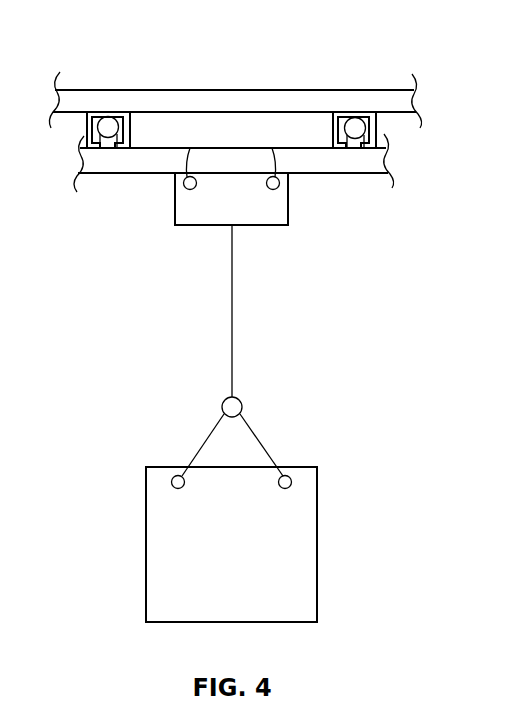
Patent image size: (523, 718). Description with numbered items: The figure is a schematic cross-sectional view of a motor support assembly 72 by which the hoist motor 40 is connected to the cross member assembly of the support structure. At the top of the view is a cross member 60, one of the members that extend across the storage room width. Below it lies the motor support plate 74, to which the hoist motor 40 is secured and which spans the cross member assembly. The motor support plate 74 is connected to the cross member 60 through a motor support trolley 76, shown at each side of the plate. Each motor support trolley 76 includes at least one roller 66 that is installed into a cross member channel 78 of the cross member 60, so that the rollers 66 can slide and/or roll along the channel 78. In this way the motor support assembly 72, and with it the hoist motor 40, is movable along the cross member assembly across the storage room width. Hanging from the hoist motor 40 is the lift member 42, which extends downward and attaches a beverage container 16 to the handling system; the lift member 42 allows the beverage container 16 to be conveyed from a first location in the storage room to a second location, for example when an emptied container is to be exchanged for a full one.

The beverage container 16 is at (219, 556).
The hoist motor 40 is at (218, 211).
The lift member 42 is at (232, 335).
The cross member 60 is at (302, 100).
The roller 66 is at (105, 120).
The motor support assembly 72 is at (142, 250).
The motor support plate 74 is at (207, 157).
The motor support trolley 76 is at (112, 147).
The cross member channel 78 is at (130, 120).